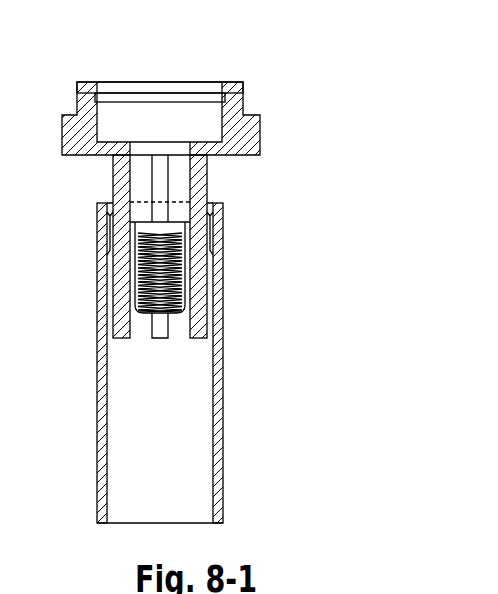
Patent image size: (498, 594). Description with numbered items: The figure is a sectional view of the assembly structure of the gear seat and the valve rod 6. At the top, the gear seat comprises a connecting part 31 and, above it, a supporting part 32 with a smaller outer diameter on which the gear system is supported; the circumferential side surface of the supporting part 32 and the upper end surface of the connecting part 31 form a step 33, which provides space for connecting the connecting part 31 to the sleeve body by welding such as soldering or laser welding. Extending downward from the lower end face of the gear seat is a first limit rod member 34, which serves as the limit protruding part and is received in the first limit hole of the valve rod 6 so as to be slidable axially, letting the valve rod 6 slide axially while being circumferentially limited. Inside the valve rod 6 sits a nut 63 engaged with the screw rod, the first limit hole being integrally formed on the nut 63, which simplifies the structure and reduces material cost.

The connecting part 31 is at (258, 135).
The supporting part 32 is at (245, 87).
The step 33 is at (247, 117).
The first limit rod member 34 is at (203, 173).
The valve rod 6 is at (217, 255).
The nut 63 is at (175, 288).